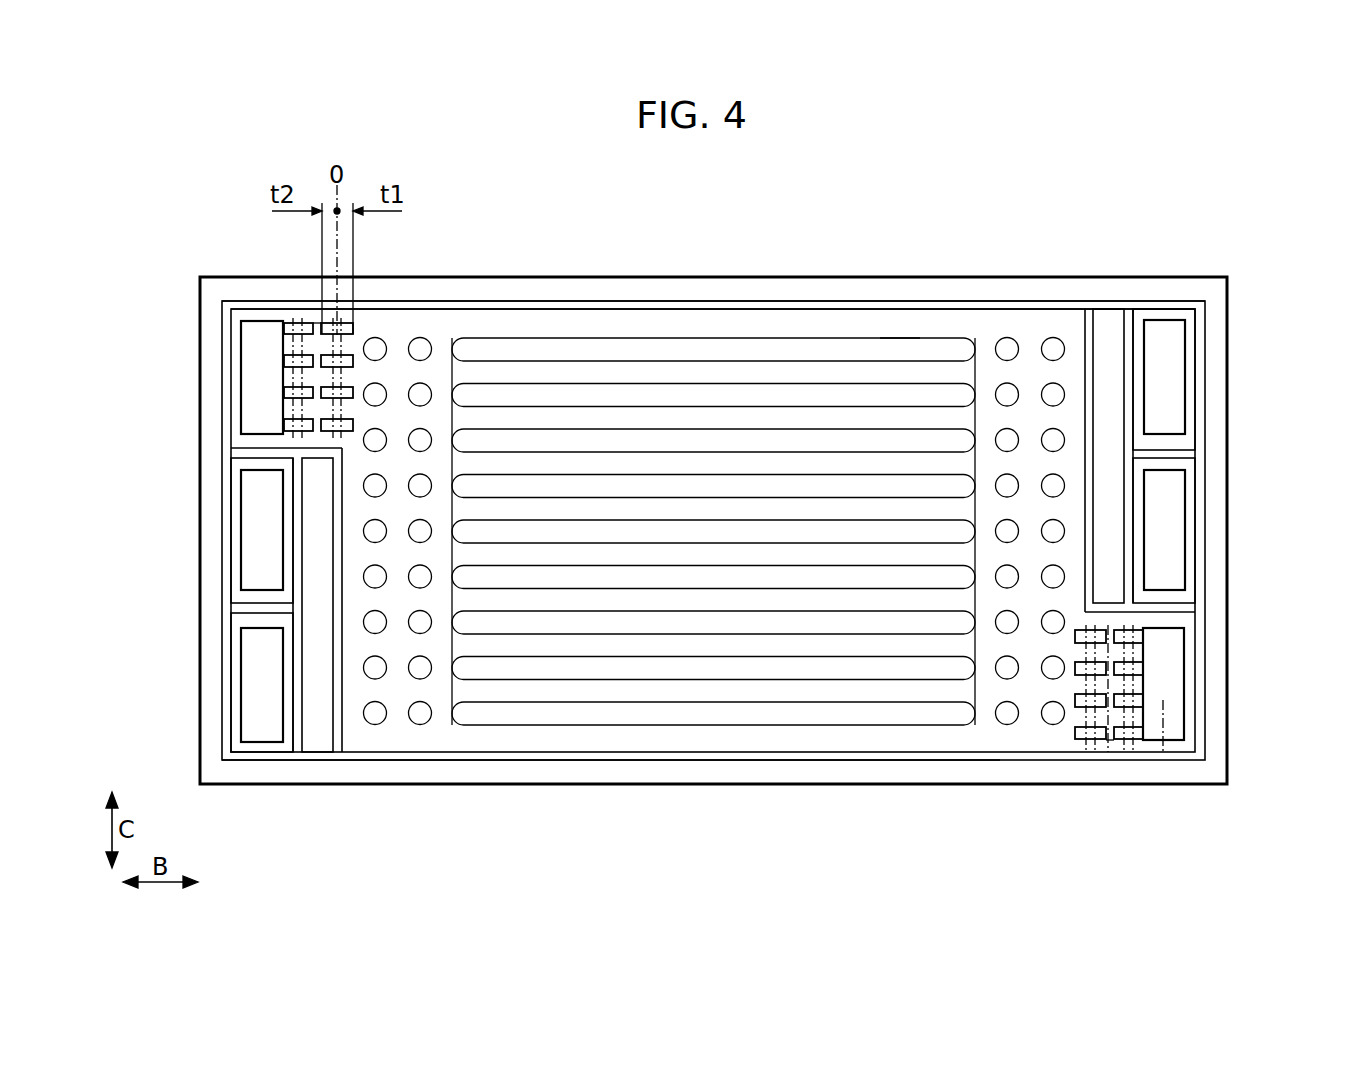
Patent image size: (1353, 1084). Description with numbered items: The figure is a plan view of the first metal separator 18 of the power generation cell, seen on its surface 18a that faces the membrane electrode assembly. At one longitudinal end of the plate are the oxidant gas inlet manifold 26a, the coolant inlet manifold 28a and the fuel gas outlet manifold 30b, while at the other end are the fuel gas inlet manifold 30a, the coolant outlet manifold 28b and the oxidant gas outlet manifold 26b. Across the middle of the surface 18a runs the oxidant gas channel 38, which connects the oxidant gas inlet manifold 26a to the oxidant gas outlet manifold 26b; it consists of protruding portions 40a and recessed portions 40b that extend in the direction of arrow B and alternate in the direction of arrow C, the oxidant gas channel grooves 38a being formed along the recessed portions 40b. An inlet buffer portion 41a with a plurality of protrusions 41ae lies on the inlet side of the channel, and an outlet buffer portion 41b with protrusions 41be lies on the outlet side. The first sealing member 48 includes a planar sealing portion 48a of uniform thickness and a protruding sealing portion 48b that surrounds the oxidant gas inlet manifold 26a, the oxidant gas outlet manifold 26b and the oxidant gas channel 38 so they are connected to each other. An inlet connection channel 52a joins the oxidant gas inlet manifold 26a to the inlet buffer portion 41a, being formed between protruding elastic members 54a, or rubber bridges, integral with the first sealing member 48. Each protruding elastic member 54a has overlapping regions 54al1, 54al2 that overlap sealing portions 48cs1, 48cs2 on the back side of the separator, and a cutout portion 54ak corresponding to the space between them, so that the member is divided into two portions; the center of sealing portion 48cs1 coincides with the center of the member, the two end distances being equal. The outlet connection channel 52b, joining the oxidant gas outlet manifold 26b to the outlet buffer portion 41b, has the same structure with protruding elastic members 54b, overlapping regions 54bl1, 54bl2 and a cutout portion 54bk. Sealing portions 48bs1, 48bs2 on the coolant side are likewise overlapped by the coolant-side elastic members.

The first metal separator 18 is at (799, 153).
The surface 18a is at (941, 768).
The oxidant gas inlet manifold 26a is at (255, 345).
The oxidant gas outlet manifold 26b is at (1173, 724).
The coolant inlet manifold 28a is at (248, 500).
The coolant outlet manifold 28b is at (1178, 512).
The fuel gas inlet manifold 30a is at (1170, 340).
The fuel gas outlet manifold 30b is at (252, 653).
The oxidant gas channel 38 is at (664, 415).
The oxidant gas channel grooves 38a is at (918, 413).
The protruding portions 40a is at (545, 440).
The recessed portions 40b is at (878, 380).
The inlet buffer portion 41a is at (395, 678).
The protrusions 41ae is at (376, 715).
The outlet buffer portion 41b is at (1028, 378).
The protrusions 41be is at (1053, 337).
The first sealing member 48 is at (767, 276).
The planar sealing portion 48a is at (832, 292).
The protruding sealing portion 48b is at (830, 760).
The sealing portion 48bs1 is at (333, 625).
The sealing portion 48bs2 is at (297, 598).
The sealing portion 48cs1 is at (340, 345).
The sealing portion 48cs2 is at (253, 333).
The inlet connection channel 52a is at (360, 322).
The outlet connection channel 52b is at (1066, 743).
The protruding elastic members 54a is at (288, 328).
The cutout portion 54ak is at (317, 428).
The overlapping region 54al1 is at (297, 394).
The overlapping region 54al2 is at (287, 404).
The protruding elastic members 54b is at (1080, 740).
The cutout portion 54bk is at (1115, 648).
The overlapping region 54bl1 is at (1120, 613).
The overlapping region 54bl2 is at (1127, 620).